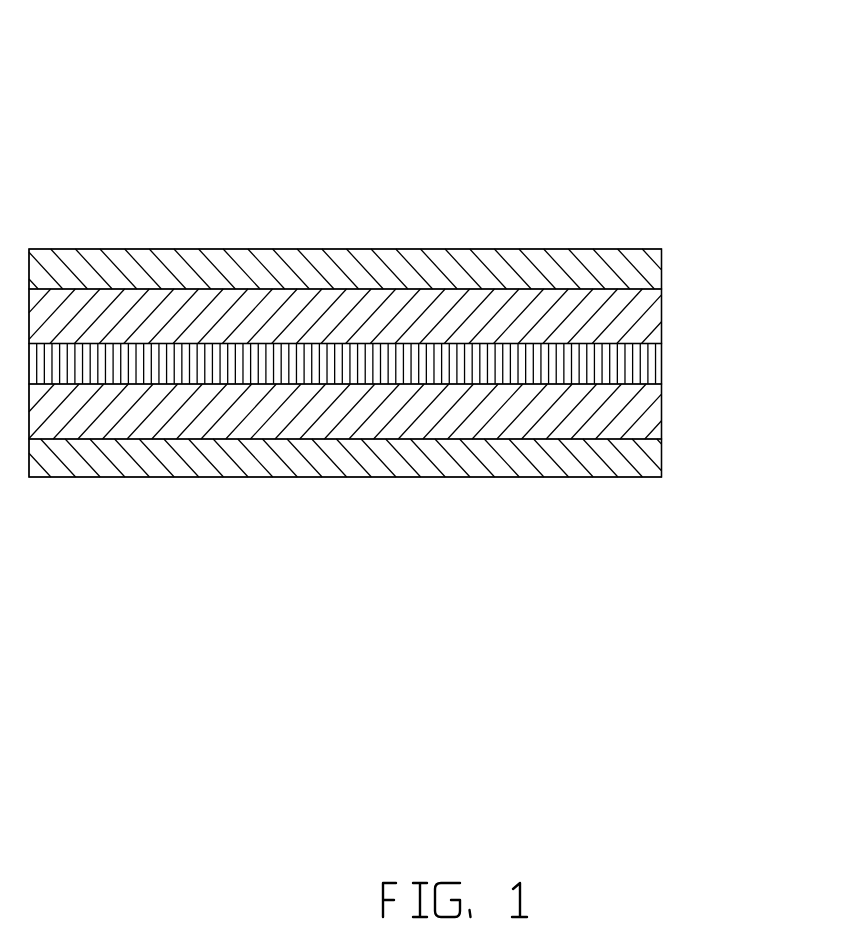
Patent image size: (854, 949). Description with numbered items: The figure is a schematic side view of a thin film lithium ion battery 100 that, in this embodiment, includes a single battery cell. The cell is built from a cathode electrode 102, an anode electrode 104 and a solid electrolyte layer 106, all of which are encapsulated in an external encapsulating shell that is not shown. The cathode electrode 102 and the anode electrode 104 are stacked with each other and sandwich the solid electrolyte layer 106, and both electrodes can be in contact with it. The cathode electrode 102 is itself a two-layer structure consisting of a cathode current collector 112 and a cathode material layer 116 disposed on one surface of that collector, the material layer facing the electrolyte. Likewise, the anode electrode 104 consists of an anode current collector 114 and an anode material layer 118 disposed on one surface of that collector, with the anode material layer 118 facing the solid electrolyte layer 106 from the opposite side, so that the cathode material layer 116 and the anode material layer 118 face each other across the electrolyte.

The thin film lithium ion battery 100 is at (383, 107).
The cathode electrode 102 is at (763, 192).
The cathode current collector 112 is at (635, 262).
The cathode material layer 116 is at (648, 322).
The solid electrolyte layer 106 is at (652, 368).
The anode electrode 104 is at (768, 382).
The anode material layer 118 is at (637, 408).
The anode current collector 114 is at (642, 470).